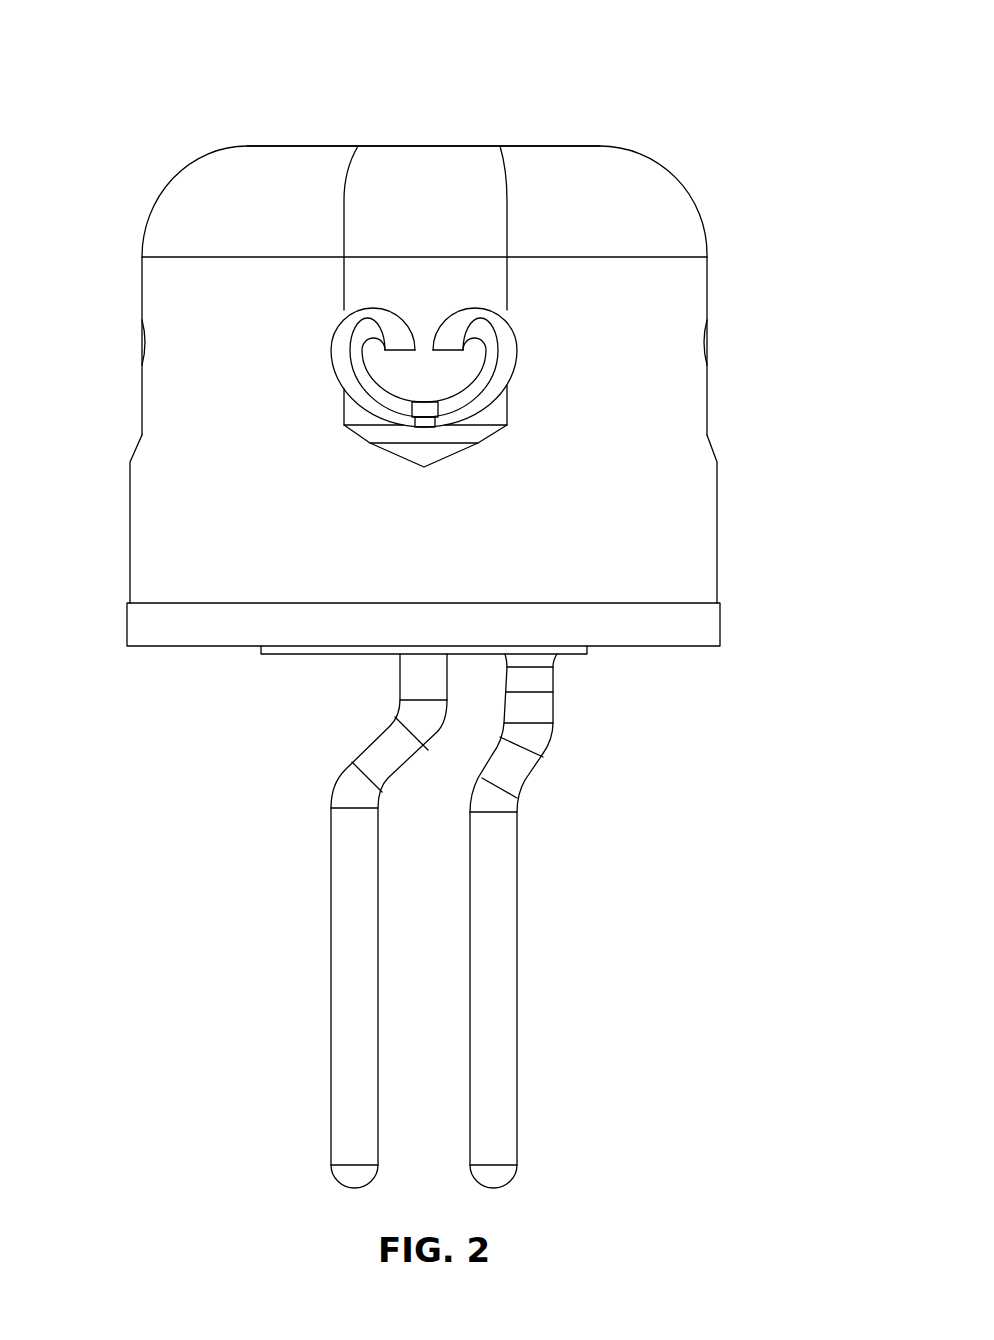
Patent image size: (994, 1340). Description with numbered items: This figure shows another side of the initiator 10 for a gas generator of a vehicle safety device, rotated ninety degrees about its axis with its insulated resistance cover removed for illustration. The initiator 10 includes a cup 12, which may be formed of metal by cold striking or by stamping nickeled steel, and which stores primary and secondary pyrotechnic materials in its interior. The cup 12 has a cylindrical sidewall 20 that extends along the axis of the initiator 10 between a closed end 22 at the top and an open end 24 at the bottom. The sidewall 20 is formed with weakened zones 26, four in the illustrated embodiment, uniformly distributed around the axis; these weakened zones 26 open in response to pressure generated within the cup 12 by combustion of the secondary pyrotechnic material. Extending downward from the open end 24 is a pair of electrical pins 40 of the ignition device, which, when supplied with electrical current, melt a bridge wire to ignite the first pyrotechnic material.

The initiator 10 is at (724, 52).
The cup 12 is at (702, 201).
The cylindrical sidewall 20 is at (708, 538).
The closed end 22 is at (527, 146).
The open end 24 is at (652, 646).
The weakened zones 26 is at (136, 350).
The electrical pins 40 is at (343, 980).